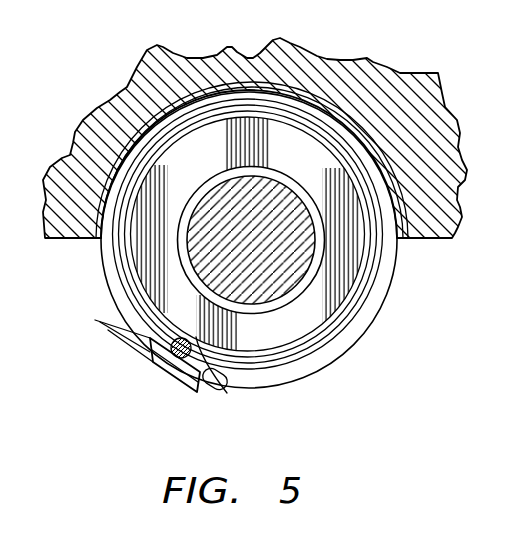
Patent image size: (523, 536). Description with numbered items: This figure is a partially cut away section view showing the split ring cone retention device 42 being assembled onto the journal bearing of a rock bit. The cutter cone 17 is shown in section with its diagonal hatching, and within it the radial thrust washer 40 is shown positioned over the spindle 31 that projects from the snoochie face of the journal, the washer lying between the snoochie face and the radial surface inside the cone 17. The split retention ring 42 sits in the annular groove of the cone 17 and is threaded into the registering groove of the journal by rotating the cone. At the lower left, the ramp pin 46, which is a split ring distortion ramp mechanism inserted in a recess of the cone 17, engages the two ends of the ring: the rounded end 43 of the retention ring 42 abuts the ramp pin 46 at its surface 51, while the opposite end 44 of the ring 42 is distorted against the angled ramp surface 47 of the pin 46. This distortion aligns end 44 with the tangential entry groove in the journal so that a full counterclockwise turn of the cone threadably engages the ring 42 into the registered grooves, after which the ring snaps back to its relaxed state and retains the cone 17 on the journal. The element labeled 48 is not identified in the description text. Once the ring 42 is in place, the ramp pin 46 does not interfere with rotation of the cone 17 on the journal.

The cone 17 is at (423, 91).
The spindle 31 is at (298, 205).
The radial thrust washer 40 is at (304, 327).
The split ring cone retention device 42 is at (393, 318).
The rounded end of cone retention ring 43 is at (198, 381).
The end of split ring 44 is at (178, 368).
The ramp pin 46 is at (148, 362).
The angled surface 47 is at (148, 338).
The spring strap 48 is at (227, 393).
The surface of ramp pin 51 is at (203, 386).